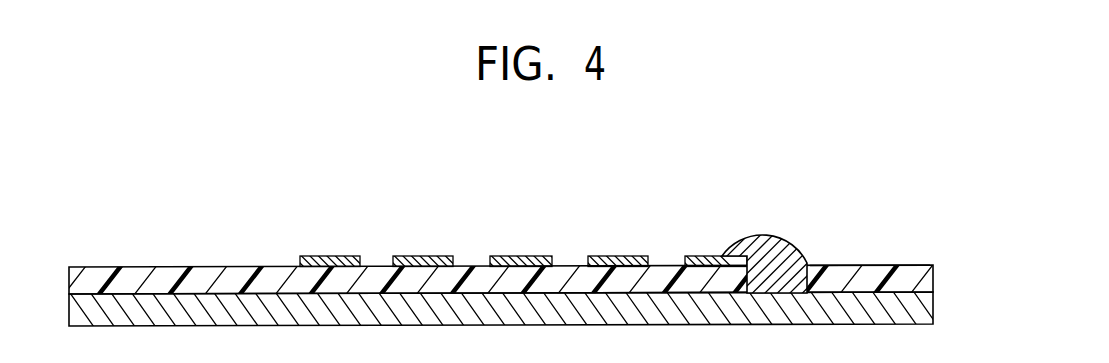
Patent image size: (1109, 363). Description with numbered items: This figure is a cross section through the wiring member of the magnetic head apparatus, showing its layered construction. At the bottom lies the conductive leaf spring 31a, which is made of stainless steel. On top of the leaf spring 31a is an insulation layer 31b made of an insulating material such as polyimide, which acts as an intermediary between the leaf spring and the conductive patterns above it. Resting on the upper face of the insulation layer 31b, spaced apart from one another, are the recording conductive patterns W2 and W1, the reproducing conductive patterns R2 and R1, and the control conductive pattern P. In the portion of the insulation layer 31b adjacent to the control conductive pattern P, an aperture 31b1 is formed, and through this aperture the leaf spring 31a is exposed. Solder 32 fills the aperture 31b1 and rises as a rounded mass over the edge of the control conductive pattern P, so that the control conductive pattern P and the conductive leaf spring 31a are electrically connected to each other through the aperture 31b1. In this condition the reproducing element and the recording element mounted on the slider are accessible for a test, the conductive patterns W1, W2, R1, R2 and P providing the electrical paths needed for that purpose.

The conductive leaf spring 31a is at (910, 318).
The insulation layer 31b is at (920, 272).
The aperture 31b1 is at (819, 265).
The recording conductive pattern W2 is at (332, 256).
The recording conductive pattern W1 is at (427, 256).
The reproducing conductive pattern R2 is at (520, 256).
The reproducing conductive pattern R1 is at (622, 256).
The control conductive pattern P is at (695, 256).
The solder 32 is at (774, 252).